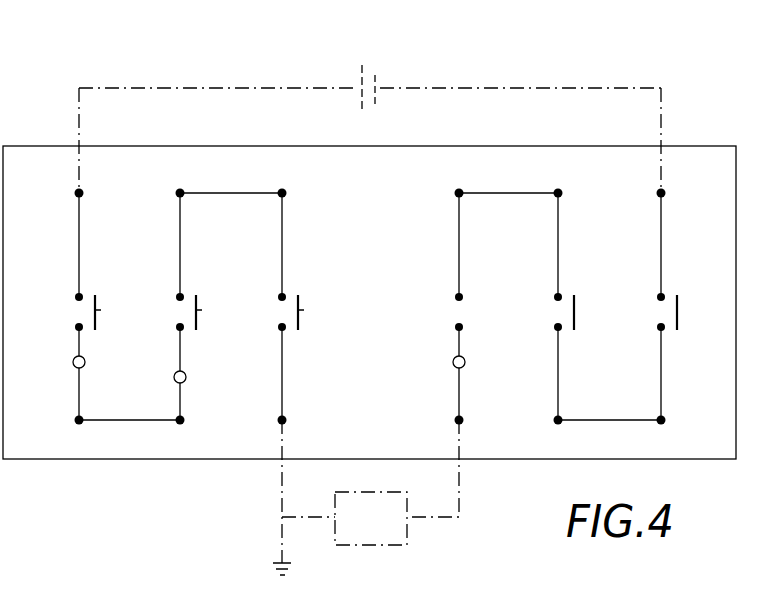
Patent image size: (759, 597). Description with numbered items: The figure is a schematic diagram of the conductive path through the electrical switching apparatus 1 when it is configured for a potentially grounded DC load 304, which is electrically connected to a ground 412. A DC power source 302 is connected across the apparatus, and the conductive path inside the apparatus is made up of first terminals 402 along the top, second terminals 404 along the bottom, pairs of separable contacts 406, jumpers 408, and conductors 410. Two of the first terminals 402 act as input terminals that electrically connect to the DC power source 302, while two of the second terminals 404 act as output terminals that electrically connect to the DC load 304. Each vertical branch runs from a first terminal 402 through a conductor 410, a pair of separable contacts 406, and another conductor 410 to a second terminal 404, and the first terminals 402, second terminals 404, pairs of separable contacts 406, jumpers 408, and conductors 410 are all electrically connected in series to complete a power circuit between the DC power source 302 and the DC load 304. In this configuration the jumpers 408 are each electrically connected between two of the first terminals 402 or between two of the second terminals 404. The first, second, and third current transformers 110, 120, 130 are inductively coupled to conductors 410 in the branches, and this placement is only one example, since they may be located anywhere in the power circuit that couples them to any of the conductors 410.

The electrical switching apparatus 1 is at (698, 136).
The DC power source 302 is at (368, 72).
The DC load 304 is at (380, 545).
The first terminals 402 is at (79, 193).
The second terminals 404 is at (79, 420).
The pairs of separable contacts 406 is at (101, 310).
The jumpers 408 is at (248, 193).
The conductors 410 is at (79, 232).
The ground 412 is at (278, 562).
The first current transformer 110 is at (73, 366).
The second current transformer 120 is at (175, 380).
The third current transformer 130 is at (455, 366).